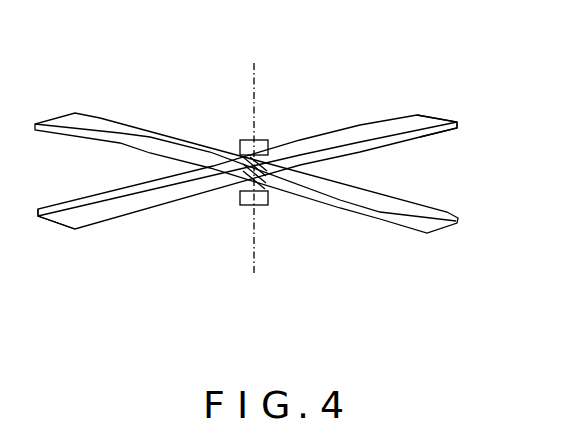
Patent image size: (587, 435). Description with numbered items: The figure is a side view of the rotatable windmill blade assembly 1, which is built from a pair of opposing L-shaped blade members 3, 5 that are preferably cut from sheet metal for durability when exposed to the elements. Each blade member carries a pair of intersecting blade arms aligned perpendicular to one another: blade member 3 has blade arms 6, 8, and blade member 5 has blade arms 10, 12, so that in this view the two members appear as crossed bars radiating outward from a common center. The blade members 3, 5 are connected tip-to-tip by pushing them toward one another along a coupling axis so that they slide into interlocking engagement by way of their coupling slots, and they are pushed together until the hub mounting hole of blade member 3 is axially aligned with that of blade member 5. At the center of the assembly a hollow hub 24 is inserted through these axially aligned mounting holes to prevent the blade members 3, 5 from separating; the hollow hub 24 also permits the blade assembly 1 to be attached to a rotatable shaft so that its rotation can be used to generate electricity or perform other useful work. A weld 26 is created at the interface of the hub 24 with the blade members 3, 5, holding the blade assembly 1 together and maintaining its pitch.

The rotatable windmill blade assembly 1 is at (273, 133).
The L-shaped blade member 3 is at (85, 230).
The L-shaped blade member 5 is at (345, 128).
The blade arm 6 is at (109, 137).
The blade arm 8 is at (107, 211).
The blade arm 10 is at (373, 203).
The blade arm 12 is at (397, 128).
The hollow hub 24 is at (248, 193).
The weld 26 is at (246, 139).